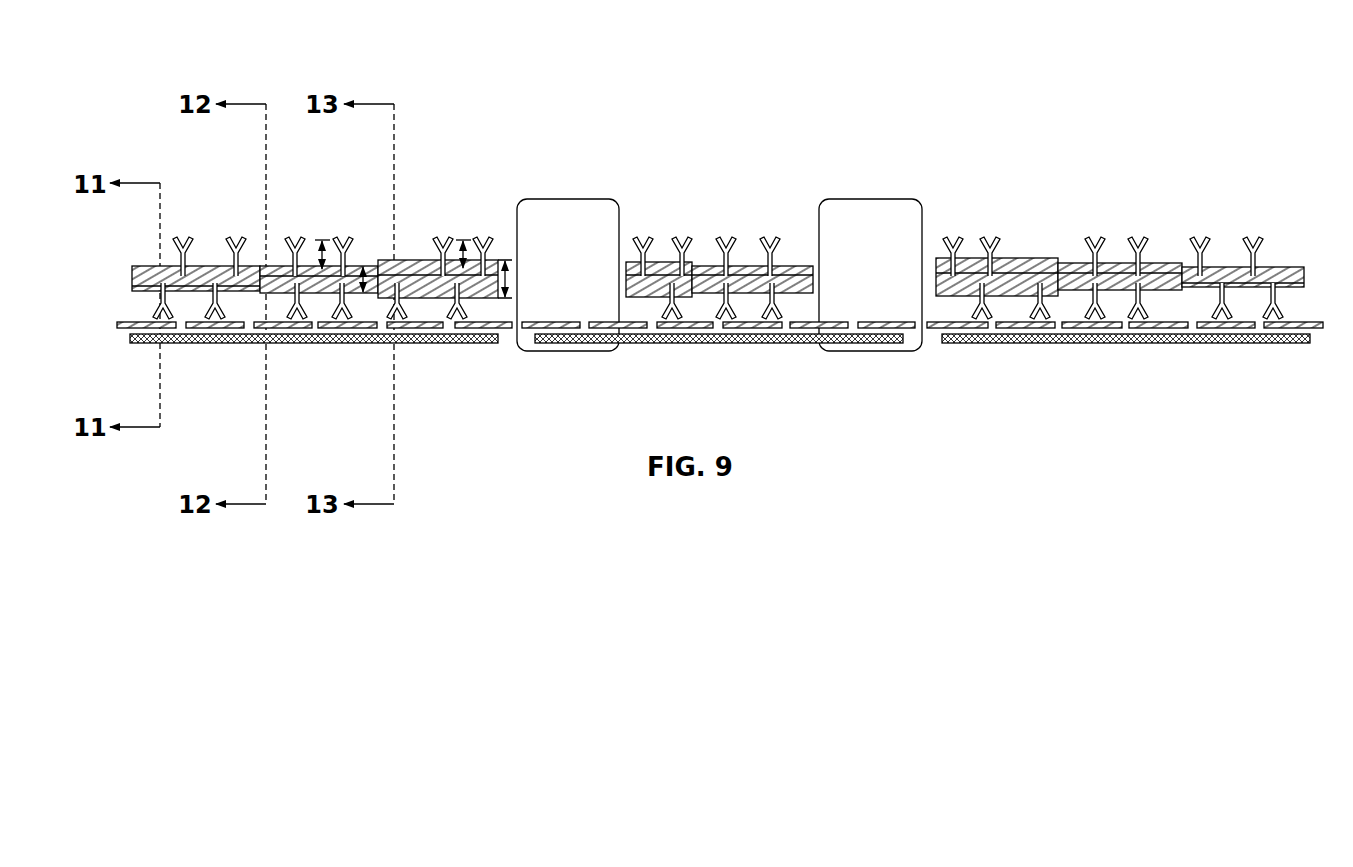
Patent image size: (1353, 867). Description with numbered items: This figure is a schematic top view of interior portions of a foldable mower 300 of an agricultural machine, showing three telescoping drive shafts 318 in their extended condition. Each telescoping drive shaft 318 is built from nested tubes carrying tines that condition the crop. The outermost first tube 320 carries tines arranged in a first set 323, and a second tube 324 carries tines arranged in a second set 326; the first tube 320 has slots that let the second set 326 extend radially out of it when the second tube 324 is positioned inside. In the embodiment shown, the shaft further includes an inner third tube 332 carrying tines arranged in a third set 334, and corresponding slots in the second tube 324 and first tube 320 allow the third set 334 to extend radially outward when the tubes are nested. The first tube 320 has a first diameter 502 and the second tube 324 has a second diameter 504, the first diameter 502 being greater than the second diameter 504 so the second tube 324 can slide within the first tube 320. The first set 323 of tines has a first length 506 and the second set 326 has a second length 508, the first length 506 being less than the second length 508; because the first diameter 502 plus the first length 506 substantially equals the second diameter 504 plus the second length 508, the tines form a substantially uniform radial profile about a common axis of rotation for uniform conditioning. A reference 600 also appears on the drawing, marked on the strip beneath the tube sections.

The foldable mower 300 is at (1073, 73).
The telescoping drive shaft 318 is at (177, 140).
The first tube 320 is at (402, 262).
The first set 323 is at (498, 182).
The second tube 324 is at (318, 287).
The second set 326 is at (283, 182).
The third tube 332 is at (205, 278).
The third set 334 is at (170, 222).
The first diameter 502 is at (505, 300).
The second diameter 504 is at (363, 294).
The first length 506 is at (460, 240).
The second length 508 is at (318, 240).
The backing layer 600 is at (1311, 338).